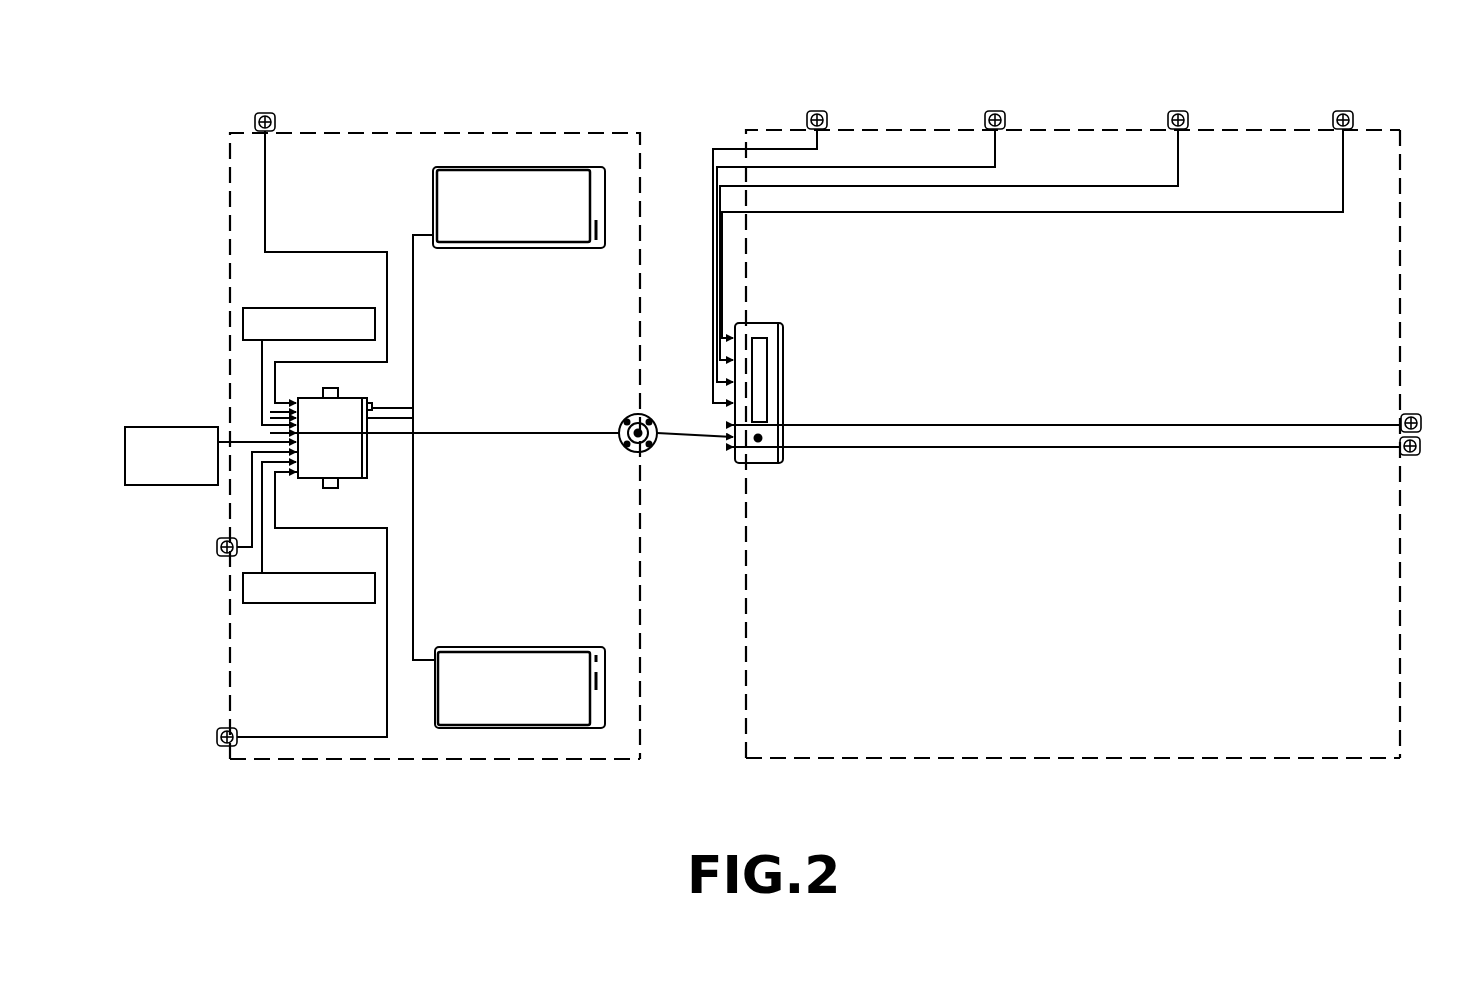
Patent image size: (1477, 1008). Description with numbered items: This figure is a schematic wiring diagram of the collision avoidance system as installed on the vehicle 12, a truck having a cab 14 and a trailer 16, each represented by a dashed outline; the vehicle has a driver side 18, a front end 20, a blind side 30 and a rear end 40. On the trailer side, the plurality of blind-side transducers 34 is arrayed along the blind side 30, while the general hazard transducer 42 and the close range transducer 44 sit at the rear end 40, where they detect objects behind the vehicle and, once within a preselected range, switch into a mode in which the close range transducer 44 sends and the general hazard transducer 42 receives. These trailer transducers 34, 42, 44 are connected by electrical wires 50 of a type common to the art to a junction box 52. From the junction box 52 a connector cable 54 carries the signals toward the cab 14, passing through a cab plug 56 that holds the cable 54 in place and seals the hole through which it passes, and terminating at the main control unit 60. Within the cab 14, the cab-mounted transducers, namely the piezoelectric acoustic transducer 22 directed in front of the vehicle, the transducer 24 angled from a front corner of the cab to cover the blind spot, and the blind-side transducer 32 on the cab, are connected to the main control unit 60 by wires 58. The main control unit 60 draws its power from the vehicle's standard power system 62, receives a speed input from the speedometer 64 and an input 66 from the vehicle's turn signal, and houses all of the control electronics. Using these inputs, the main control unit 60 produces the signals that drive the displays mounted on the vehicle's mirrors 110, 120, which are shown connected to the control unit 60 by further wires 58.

The vehicle 12 is at (184, 91).
The cab 14 is at (398, 131).
The trailer 16 is at (1012, 758).
The driver side 18 is at (542, 760).
The front end 20 is at (230, 345).
The piezoelectric acoustic transducer 22 is at (217, 549).
The transducer 24 is at (217, 740).
The blind side 30 is at (898, 130).
The transducer 32 is at (273, 113).
The transducers 34 is at (820, 113).
The rear end 40 is at (1400, 603).
The general hazard transducer 42 is at (1412, 460).
The close range transducer 44 is at (1415, 413).
The electrical wires 50 is at (737, 148).
The junction box 52 is at (783, 342).
The connector cable 54 is at (458, 430).
The cab plug 56 is at (633, 415).
The wires 58 is at (335, 253).
The main control unit 60 is at (342, 473).
The standard power system 62 is at (173, 486).
The speedometer 64 is at (243, 323).
The input 66 is at (312, 603).
The mirror 110 is at (498, 647).
The mirror 120 is at (500, 165).